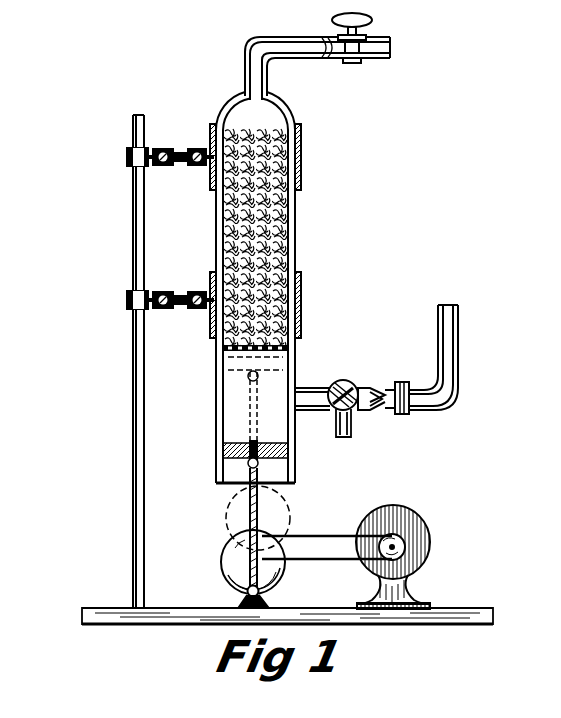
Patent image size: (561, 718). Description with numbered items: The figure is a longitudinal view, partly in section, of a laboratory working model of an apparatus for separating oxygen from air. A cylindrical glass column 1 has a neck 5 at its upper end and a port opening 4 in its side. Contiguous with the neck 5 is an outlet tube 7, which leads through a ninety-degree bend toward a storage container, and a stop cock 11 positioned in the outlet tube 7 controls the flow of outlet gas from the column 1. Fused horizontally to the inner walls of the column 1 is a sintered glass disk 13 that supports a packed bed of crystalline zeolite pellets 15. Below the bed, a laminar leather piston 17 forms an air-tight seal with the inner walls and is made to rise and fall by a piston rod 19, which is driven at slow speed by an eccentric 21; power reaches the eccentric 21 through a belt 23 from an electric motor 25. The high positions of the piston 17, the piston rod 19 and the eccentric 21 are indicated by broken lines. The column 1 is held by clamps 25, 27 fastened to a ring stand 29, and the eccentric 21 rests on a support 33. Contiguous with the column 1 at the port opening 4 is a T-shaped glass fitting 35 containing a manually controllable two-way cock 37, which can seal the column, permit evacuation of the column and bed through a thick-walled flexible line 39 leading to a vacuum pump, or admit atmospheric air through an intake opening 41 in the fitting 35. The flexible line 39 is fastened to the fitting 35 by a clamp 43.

The cylindrical glass column 1 is at (296, 241).
The port opening 4 is at (300, 394).
The neck 5 is at (245, 82).
The outlet tube 7 is at (296, 40).
The stop cock 11 is at (362, 50).
The sintered glass disk 13 is at (222, 349).
The packed bed of crystalline zeolite pellets 15 is at (263, 248).
The laminar leather piston 17 is at (296, 456).
The piston rod 19 is at (262, 502).
The eccentric 21 is at (284, 572).
The belt 23 is at (312, 535).
The electric motor / clamp 25 is at (408, 516).
The clamp 27 is at (198, 290).
The ring stand 29 is at (140, 242).
The support 33 is at (266, 606).
The T-shaped glass fitting 35 is at (336, 412).
The two-way cock 37 is at (358, 390).
The thick-walled flexible line 39 is at (440, 386).
The intake opening 41 is at (346, 438).
The clamp 43 is at (416, 410).